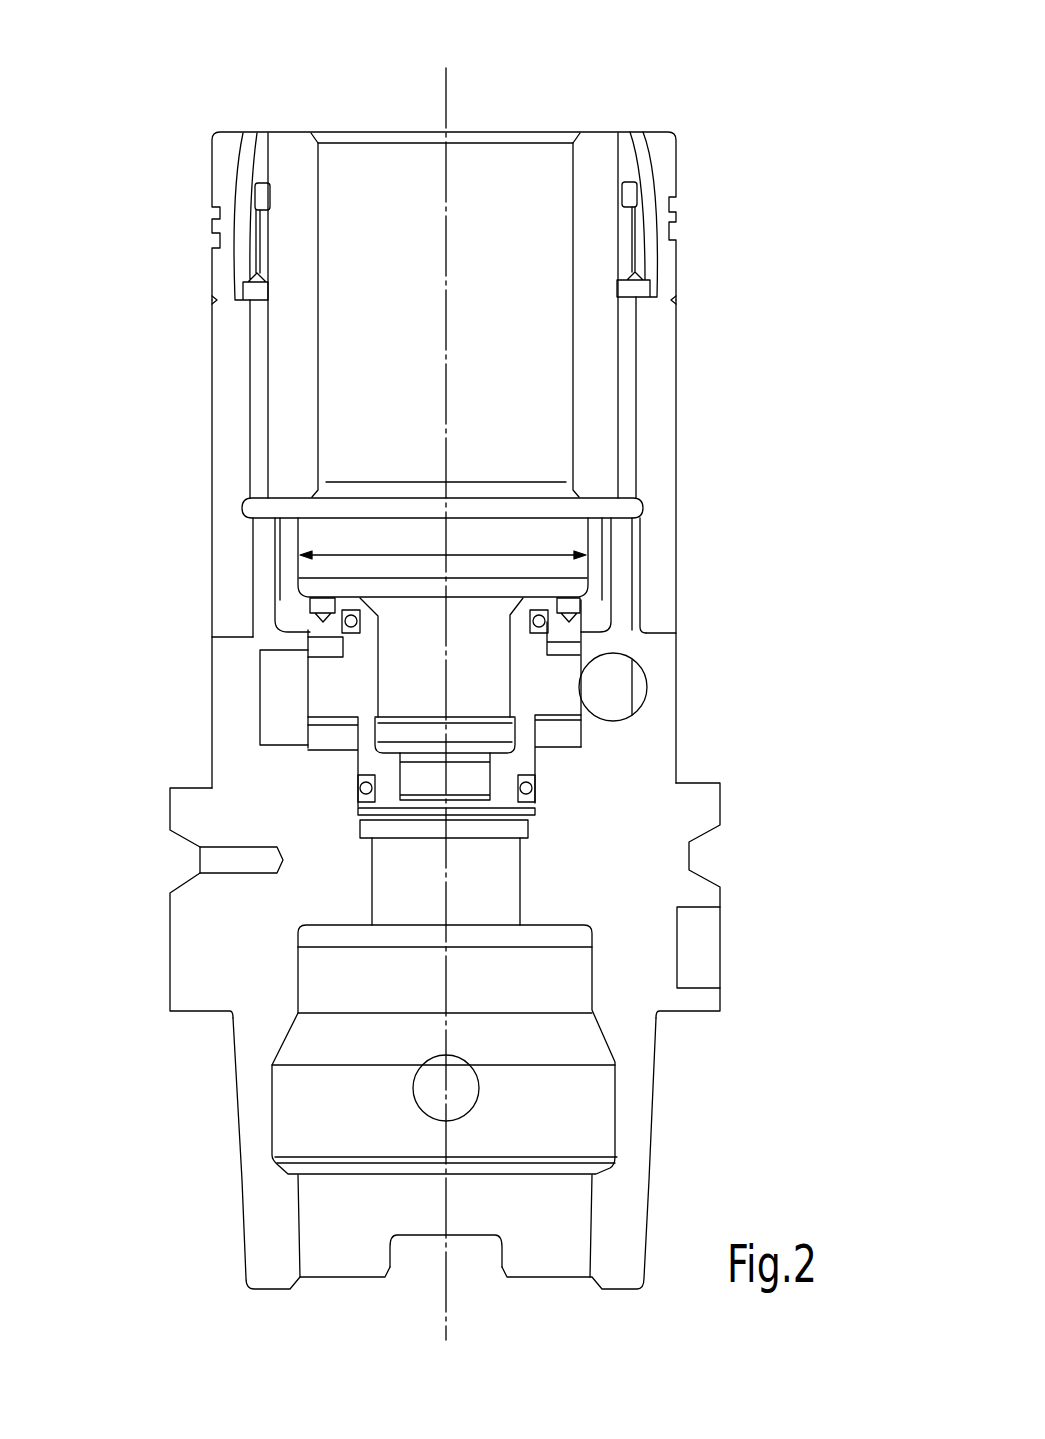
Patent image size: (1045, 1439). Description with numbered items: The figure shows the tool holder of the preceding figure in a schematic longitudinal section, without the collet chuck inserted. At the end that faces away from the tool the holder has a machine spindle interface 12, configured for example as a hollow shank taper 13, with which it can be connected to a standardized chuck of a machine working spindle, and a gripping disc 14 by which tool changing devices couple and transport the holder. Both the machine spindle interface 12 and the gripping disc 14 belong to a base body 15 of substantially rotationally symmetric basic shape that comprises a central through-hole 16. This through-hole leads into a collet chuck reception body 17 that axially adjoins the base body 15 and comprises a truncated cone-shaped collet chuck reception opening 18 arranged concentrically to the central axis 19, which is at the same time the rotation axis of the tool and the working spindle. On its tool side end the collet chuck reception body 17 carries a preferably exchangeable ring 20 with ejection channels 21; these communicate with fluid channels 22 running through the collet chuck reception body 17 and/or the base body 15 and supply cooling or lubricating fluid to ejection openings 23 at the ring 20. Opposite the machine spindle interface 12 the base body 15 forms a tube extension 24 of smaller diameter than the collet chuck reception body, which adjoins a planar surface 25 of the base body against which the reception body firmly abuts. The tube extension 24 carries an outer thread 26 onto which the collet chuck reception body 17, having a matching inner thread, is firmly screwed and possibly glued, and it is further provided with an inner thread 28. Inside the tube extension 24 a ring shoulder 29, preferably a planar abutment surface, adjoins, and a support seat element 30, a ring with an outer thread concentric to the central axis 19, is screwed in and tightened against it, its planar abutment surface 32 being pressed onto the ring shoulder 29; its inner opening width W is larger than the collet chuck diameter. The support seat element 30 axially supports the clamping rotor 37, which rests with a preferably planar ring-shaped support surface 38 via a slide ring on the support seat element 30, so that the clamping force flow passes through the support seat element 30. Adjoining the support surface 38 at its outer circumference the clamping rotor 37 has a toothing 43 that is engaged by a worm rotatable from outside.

The machine spindle interface 12 is at (797, 1060).
The hollow shank taper 13 is at (635, 1105).
The gripping disc 14 is at (735, 856).
The base body 15 is at (647, 755).
The central through-hole 16 is at (457, 1258).
The collet chuck reception body 17 is at (720, 345).
The collet chuck reception opening 18 is at (570, 192).
The central axis 19 is at (443, 112).
The ring 20 is at (702, 160).
The ejection channels 21 is at (652, 192).
The fluid channels 22 is at (627, 435).
The ejection openings 23 is at (638, 132).
The tube extension 24 is at (622, 550).
The planar surface 25 is at (645, 633).
The outer thread 26 is at (645, 567).
The inner thread 28 is at (610, 540).
The ring shoulder 29 is at (293, 633).
The support seat element 30 is at (293, 570).
The planar abutment surface 32 is at (590, 627).
The clamping rotor 37 is at (350, 688).
The support surface 38 is at (337, 655).
The toothing 43 is at (308, 707).